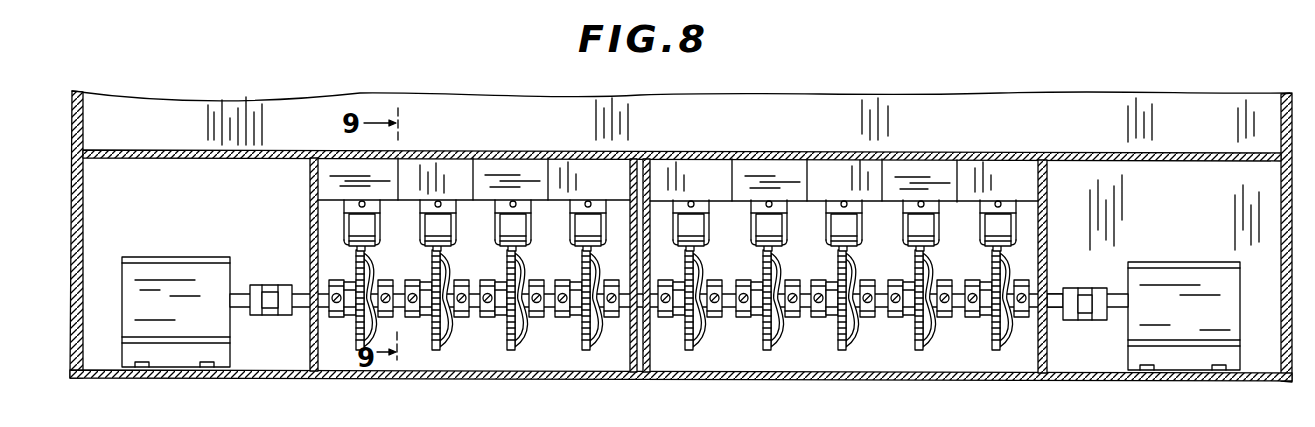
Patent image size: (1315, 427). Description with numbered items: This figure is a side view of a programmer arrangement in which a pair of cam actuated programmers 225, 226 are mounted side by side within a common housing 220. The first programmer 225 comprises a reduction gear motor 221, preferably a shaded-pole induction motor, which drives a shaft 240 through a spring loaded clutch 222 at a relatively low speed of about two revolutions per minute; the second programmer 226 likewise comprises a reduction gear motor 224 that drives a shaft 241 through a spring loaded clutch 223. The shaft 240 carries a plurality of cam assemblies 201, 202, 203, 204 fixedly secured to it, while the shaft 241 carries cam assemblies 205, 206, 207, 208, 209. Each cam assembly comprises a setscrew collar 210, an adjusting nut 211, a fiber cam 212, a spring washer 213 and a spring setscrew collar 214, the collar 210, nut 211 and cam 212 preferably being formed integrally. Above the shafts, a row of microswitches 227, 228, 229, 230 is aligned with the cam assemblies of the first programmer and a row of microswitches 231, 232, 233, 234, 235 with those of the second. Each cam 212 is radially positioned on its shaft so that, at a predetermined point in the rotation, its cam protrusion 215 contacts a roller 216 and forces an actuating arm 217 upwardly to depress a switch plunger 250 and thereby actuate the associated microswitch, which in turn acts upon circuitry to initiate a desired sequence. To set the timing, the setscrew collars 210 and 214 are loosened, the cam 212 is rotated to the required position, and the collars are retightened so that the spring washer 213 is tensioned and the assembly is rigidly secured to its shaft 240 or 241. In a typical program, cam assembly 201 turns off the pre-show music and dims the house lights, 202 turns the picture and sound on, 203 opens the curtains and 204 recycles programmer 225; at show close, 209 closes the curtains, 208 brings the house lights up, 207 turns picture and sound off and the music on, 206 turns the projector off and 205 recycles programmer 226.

The cam assembly 201 is at (333, 326).
The cam assembly 202 is at (423, 329).
The cam assembly 203 is at (493, 329).
The cam assembly 204 is at (570, 329).
The cam assembly 205 is at (675, 334).
The cam assembly 206 is at (739, 332).
The cam assembly 207 is at (820, 334).
The cam assembly 208 is at (897, 334).
The cam assembly 209 is at (979, 334).
The setscrew collar 210 is at (327, 315).
The adjusting nut 211 is at (348, 320).
The fiber cam 212 is at (352, 263).
The spring washer 213 is at (366, 261).
The spring setscrew collar 214 is at (373, 273).
The cam protrusion 215 is at (441, 317).
The roller 216 is at (443, 252).
The actuating arm 217 is at (452, 218).
The housing 220 is at (802, 160).
The reduction gear motor 221 is at (182, 256).
The spring loaded clutch 222 is at (281, 275).
The spring loaded clutch 223 is at (1078, 321).
The reduction gear motor 224 is at (1168, 260).
The cam actuated programmer 225 is at (185, 143).
The cam actuated programmer 226 is at (1077, 152).
The microswitch 227 is at (343, 172).
The microswitch 228 is at (452, 143).
The microswitch 229 is at (520, 145).
The microswitch 230 is at (588, 145).
The microswitch 231 is at (672, 165).
The microswitch 232 is at (768, 166).
The microswitch 233 is at (857, 168).
The microswitch 234 is at (935, 168).
The microswitch 235 is at (1017, 141).
The shaft 240 is at (300, 313).
The shaft 241 is at (1056, 299).
The switch plunger 250 is at (436, 203).